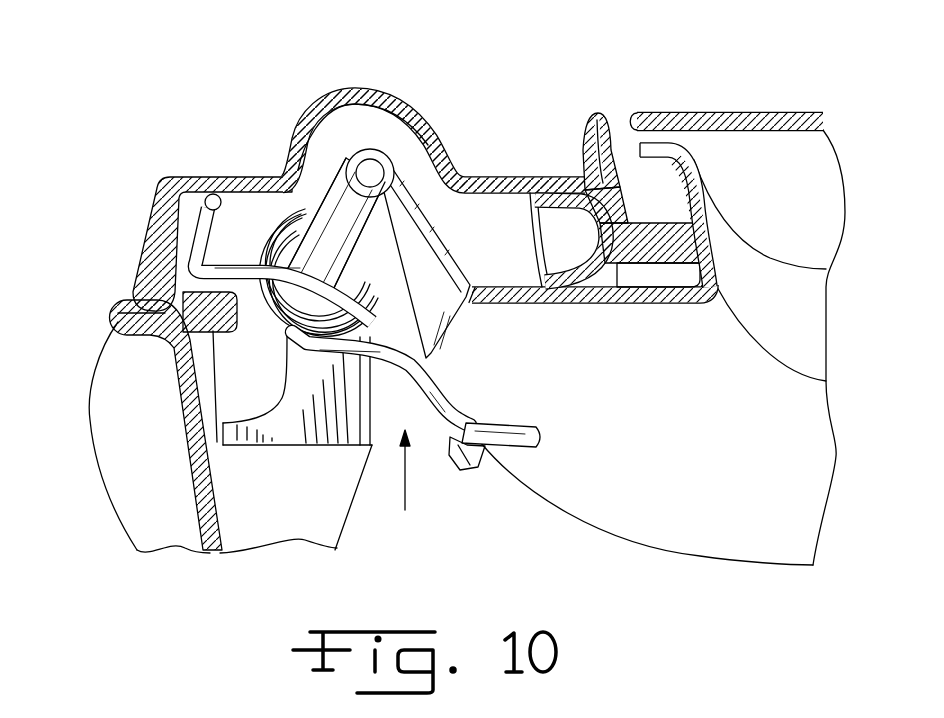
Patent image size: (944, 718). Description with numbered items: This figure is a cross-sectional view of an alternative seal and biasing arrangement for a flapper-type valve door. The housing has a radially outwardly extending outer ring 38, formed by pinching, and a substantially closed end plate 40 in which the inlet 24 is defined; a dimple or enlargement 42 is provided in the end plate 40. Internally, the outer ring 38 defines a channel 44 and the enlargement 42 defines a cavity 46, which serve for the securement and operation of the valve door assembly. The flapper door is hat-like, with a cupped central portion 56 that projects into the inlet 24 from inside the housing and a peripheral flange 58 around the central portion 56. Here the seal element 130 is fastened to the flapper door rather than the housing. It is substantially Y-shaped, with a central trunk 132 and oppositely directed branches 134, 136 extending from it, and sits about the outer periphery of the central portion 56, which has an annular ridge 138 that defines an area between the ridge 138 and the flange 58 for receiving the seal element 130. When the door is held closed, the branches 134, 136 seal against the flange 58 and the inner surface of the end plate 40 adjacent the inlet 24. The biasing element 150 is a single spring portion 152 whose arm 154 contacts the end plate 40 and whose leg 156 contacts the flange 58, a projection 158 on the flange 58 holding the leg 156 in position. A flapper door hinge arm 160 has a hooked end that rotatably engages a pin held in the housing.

The inlet 24 is at (600, 113).
The outer ring 38 is at (123, 303).
The end plate 40 is at (510, 177).
The enlargement 42 is at (366, 93).
The channel 44 is at (182, 290).
The cavity 46 is at (343, 127).
The central portion 56 is at (767, 117).
The peripheral flange 58 is at (511, 293).
The seal element 130 is at (614, 207).
The central trunk 132 is at (657, 277).
The branch 134 is at (557, 280).
The branch 136 is at (547, 177).
The annular ridge 138 is at (687, 198).
The biasing element 150 is at (410, 489).
The spring portion 152 is at (280, 230).
The arm 154 is at (184, 182).
The leg 156 is at (542, 434).
The projection 158 is at (457, 477).
The flapper door hinge arm 160 is at (417, 190).